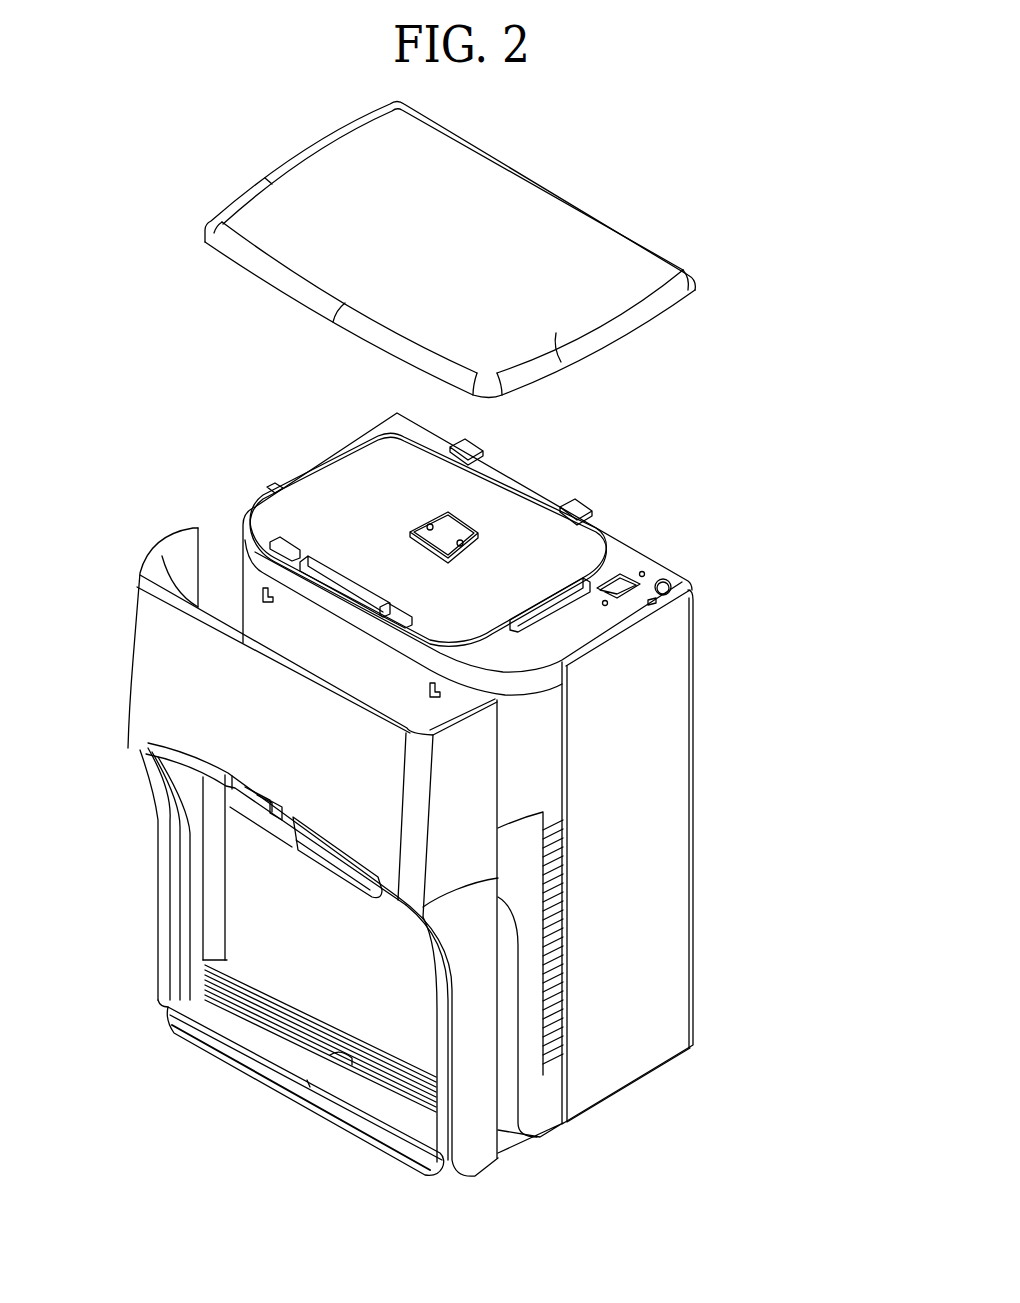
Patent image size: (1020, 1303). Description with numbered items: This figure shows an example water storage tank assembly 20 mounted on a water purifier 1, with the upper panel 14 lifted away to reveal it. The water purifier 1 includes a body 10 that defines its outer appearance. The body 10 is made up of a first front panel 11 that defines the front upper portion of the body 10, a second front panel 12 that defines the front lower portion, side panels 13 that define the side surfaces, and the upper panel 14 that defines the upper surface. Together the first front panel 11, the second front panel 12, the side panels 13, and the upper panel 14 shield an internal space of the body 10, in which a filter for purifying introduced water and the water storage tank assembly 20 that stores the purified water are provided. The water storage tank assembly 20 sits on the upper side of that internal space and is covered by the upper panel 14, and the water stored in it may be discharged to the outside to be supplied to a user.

The water purifier 1 is at (123, 200).
The body 10 is at (771, 367).
The first front panel 11 is at (470, 775).
The second front panel 12 is at (507, 1002).
The side panels 13 is at (668, 748).
The upper panel 14 is at (600, 295).
The water storage tank assembly 20 is at (589, 501).